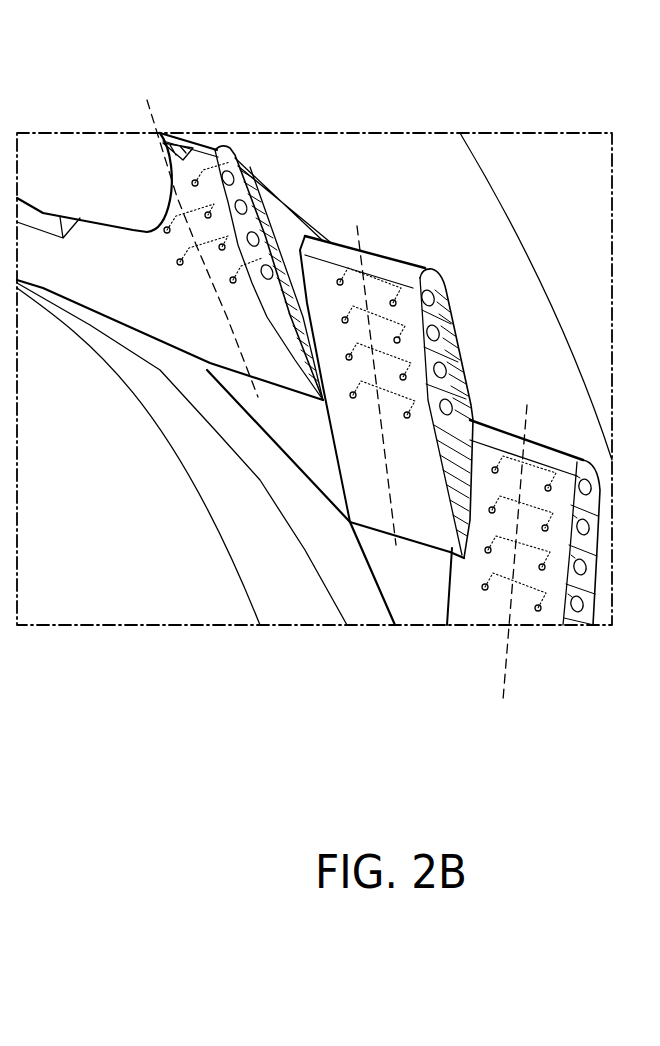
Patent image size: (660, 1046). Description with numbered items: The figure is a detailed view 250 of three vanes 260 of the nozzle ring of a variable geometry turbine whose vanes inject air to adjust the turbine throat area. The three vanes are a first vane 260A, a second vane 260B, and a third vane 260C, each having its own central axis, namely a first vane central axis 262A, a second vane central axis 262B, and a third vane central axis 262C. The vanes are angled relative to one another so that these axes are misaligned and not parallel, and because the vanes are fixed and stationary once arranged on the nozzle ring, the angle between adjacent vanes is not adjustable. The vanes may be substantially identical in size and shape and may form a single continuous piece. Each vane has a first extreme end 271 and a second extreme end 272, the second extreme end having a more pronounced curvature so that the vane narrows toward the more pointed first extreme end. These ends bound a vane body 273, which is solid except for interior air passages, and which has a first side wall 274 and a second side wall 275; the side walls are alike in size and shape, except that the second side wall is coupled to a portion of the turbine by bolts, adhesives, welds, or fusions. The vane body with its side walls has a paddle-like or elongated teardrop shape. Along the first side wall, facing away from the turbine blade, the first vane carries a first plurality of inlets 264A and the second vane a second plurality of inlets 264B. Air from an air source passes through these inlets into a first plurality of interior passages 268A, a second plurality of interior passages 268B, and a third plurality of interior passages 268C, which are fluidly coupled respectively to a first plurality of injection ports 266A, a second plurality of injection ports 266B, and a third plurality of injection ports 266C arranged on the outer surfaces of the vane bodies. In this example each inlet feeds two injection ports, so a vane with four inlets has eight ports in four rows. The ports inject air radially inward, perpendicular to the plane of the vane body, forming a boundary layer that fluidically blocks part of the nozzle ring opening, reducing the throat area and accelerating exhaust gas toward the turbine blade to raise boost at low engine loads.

The detailed view 250 is at (520, 66).
The vanes 260 is at (497, 227).
The first vane 260A is at (210, 367).
The second vane 260B is at (343, 530).
The third vane 260C is at (558, 447).
The first vane central axis 262A is at (157, 131).
The second vane central axis 262B is at (362, 232).
The third vane central axis 262C is at (524, 432).
The first plurality of inlets 264A is at (258, 204).
The second plurality of inlets 264B is at (451, 327).
The first plurality of injection ports 266A is at (176, 272).
The second plurality of injection ports 266B is at (358, 410).
The third plurality of injection ports 266C is at (482, 608).
The first plurality of interior passages 268A is at (182, 144).
The second plurality of interior passages 268B is at (389, 266).
The third plurality of interior passages 268C is at (555, 458).
The first extreme end 271 is at (273, 440).
The second extreme end 272 is at (218, 144).
The vane body 273 is at (210, 315).
The first side wall 274 is at (298, 245).
The second side wall 275 is at (136, 244).